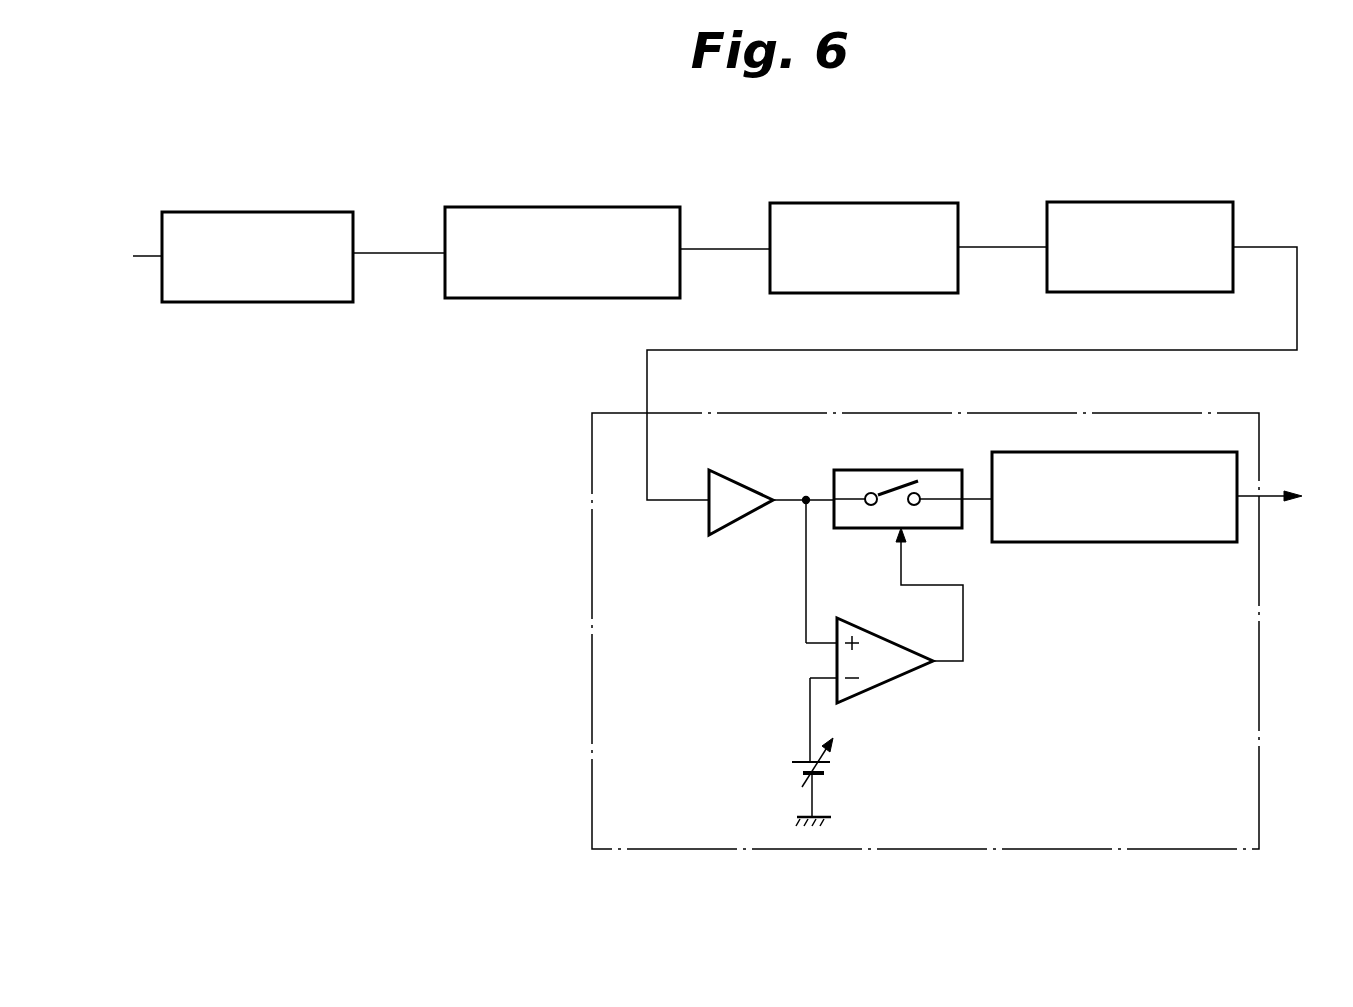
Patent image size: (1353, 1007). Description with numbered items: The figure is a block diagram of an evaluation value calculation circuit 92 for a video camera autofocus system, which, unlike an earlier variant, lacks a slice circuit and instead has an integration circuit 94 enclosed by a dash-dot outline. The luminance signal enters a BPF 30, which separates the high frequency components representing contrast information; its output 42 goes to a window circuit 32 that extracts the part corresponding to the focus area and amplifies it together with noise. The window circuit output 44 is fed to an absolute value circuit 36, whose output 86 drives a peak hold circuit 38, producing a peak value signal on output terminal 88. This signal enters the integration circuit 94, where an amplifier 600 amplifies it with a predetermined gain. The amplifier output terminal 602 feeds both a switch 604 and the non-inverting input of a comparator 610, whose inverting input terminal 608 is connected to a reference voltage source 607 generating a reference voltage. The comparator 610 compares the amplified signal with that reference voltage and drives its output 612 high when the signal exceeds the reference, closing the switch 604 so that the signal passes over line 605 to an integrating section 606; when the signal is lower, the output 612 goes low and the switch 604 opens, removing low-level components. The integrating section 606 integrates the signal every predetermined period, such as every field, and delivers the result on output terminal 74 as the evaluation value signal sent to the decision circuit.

The BPF 30 is at (237, 212).
The BPF output 42 is at (396, 253).
The window circuit 32 is at (556, 207).
The output terminal of the window circuit 44 is at (726, 249).
The absolute value circuit 36 is at (876, 203).
The output terminal of the absolute value circuit 86 is at (998, 247).
The peak hold circuit 38 is at (1172, 202).
The output terminal of the peak hold circuit 88 is at (1272, 247).
The integration circuit 94 is at (1262, 430).
The evaluation value calculation circuit 92 is at (508, 600).
The amplifier 600 is at (738, 482).
The output terminal of the amplifier 602 is at (800, 505).
The switch 604 is at (862, 470).
The output terminal of the switch 605 is at (975, 504).
The integrating section 606 is at (1124, 545).
The output terminal of the integrating section 74 is at (1272, 497).
The comparator 610 is at (868, 626).
The output of the comparator 612 is at (963, 648).
The inverting input terminal of the comparator 608 is at (808, 712).
The reference voltage source 607 is at (834, 765).